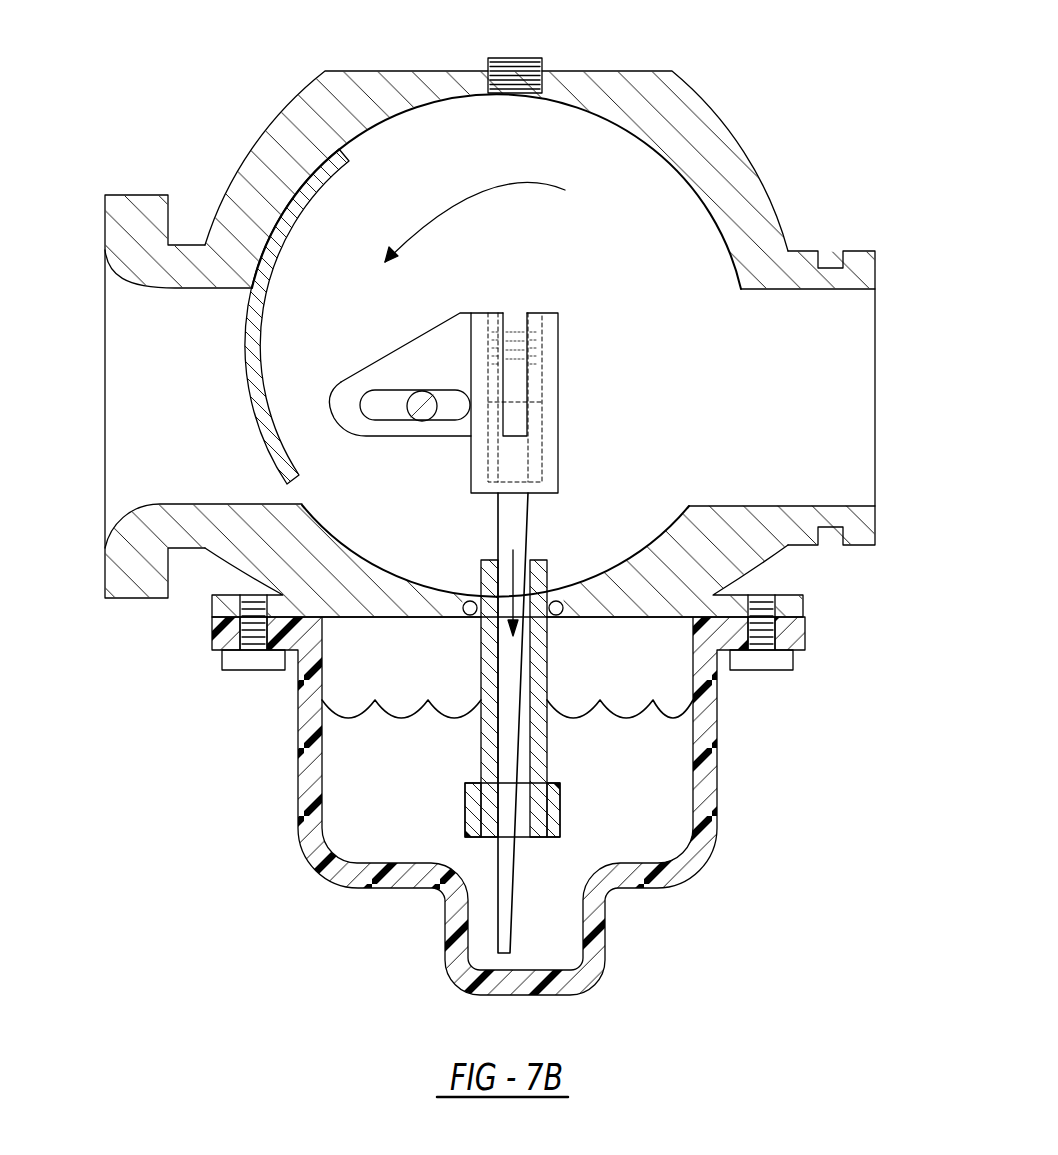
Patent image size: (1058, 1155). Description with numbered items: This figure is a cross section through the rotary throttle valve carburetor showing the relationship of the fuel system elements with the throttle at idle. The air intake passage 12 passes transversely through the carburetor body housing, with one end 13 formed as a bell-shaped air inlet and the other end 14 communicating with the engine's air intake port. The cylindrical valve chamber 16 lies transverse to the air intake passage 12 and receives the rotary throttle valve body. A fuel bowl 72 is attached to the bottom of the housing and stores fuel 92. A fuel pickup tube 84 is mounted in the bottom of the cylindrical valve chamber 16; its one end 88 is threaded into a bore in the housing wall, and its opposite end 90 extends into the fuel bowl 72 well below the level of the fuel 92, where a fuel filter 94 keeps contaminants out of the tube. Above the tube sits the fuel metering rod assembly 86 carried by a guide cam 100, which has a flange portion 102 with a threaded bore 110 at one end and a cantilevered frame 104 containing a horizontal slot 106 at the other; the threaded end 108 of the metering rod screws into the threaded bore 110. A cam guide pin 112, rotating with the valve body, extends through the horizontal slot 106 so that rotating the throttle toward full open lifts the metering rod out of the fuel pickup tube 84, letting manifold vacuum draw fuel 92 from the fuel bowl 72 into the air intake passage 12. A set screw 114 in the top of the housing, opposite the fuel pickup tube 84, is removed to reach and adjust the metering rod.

The air intake passage 12 is at (174, 363).
The one end 13 is at (140, 508).
The other end 14 is at (878, 518).
The cylindrical valve chamber 16 is at (681, 168).
The fuel bowl 72 is at (718, 783).
The fuel pickup tube 84 is at (550, 680).
The fuel metering rod assembly 86 is at (562, 373).
The one end 88 is at (467, 615).
The opposite end 90 is at (513, 906).
The fuel 92 is at (412, 807).
The fuel filter 94 is at (553, 807).
The guide cam 100 is at (411, 381).
The flange portion 102 is at (562, 403).
The cantilevered frame 104 is at (358, 370).
The horizontal slot 106 is at (453, 397).
The threaded end 108 is at (548, 350).
The threaded bore 110 is at (545, 433).
The cam guide pin 112 is at (420, 403).
The set screw 114 is at (542, 62).